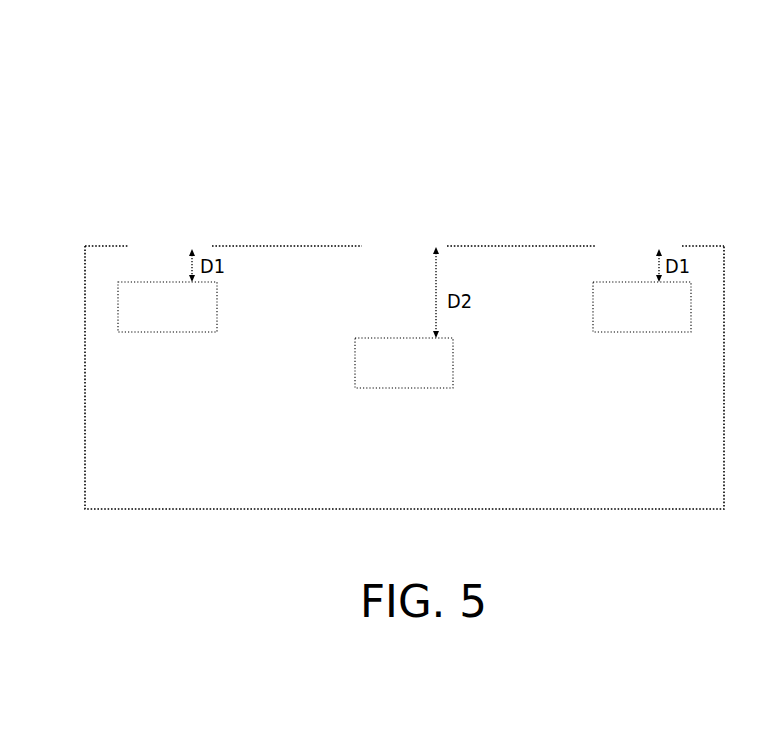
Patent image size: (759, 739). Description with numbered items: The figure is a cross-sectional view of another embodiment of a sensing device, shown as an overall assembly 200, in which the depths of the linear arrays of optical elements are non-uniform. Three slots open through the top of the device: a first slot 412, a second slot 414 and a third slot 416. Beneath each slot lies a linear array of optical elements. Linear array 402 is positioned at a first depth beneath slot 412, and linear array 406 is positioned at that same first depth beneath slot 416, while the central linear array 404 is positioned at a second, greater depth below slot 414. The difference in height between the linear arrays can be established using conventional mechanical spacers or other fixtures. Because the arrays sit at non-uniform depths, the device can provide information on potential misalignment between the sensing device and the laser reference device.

The electronic module 200 is at (377, 114).
The linear array 402 is at (217, 306).
The linear array 404 is at (453, 362).
The linear array 406 is at (593, 306).
The slot 412 is at (157, 235).
The slot 414 is at (396, 240).
The slot 416 is at (624, 240).